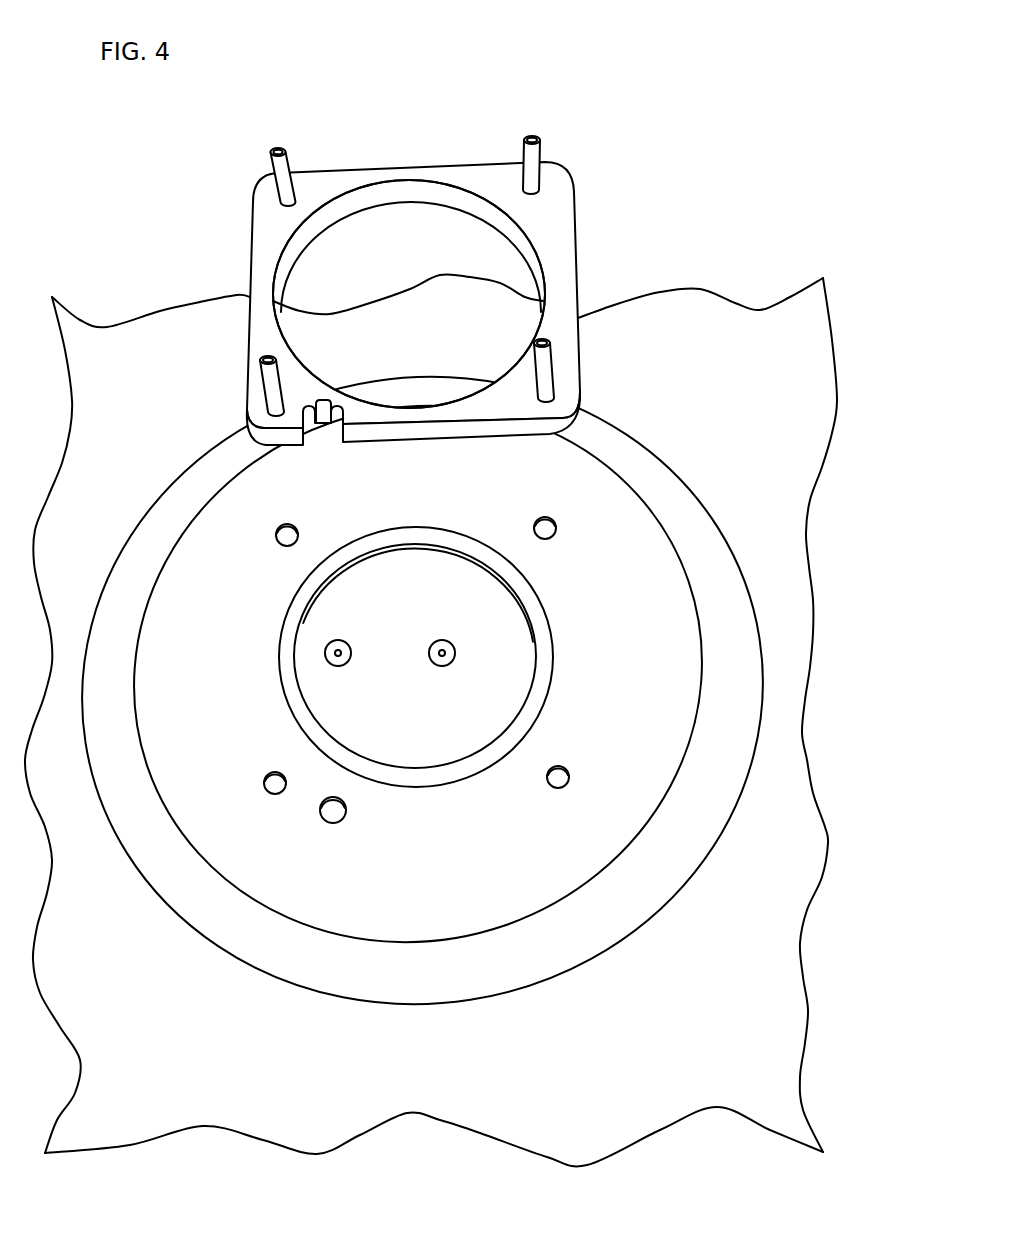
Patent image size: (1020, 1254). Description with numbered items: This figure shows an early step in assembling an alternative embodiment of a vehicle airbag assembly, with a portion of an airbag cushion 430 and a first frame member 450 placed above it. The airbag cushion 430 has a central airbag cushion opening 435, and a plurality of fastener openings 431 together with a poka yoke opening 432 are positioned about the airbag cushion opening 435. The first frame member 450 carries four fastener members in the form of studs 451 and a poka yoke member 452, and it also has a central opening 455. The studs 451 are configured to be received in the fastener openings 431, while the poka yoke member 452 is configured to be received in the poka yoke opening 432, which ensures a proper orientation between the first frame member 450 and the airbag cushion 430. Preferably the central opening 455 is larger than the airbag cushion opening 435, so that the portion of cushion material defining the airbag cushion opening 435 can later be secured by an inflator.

The airbag cushion 430 is at (540, 852).
The fastener openings 431 is at (570, 775).
The poka yoke opening 432 is at (340, 820).
The airbag cushion opening 435 is at (497, 677).
The first frame member 450 is at (638, 256).
The studs 451 is at (271, 166).
The poka yoke member 452 is at (322, 410).
The central opening 455 is at (428, 237).